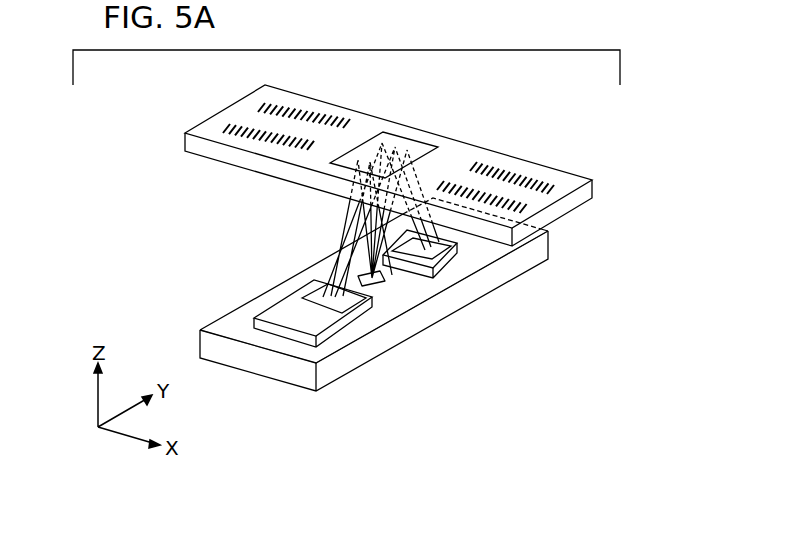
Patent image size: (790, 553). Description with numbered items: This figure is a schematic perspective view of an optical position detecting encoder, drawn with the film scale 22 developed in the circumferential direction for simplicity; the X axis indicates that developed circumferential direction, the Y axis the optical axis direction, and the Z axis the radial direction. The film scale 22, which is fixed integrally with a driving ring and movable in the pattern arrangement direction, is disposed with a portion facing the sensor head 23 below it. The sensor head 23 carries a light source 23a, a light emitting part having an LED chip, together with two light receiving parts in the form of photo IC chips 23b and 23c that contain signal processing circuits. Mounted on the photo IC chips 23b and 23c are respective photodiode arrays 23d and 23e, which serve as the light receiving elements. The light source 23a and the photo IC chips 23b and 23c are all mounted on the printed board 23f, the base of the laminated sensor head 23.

The film scale 22 is at (455, 140).
The sensor head 23 is at (217, 318).
The light source 23a is at (386, 283).
The photo IC chip 23b is at (287, 312).
The photo IC chip 23c is at (492, 256).
The photodiode array 23d is at (318, 290).
The photodiode array 23e is at (460, 245).
The printed board 23f is at (363, 330).